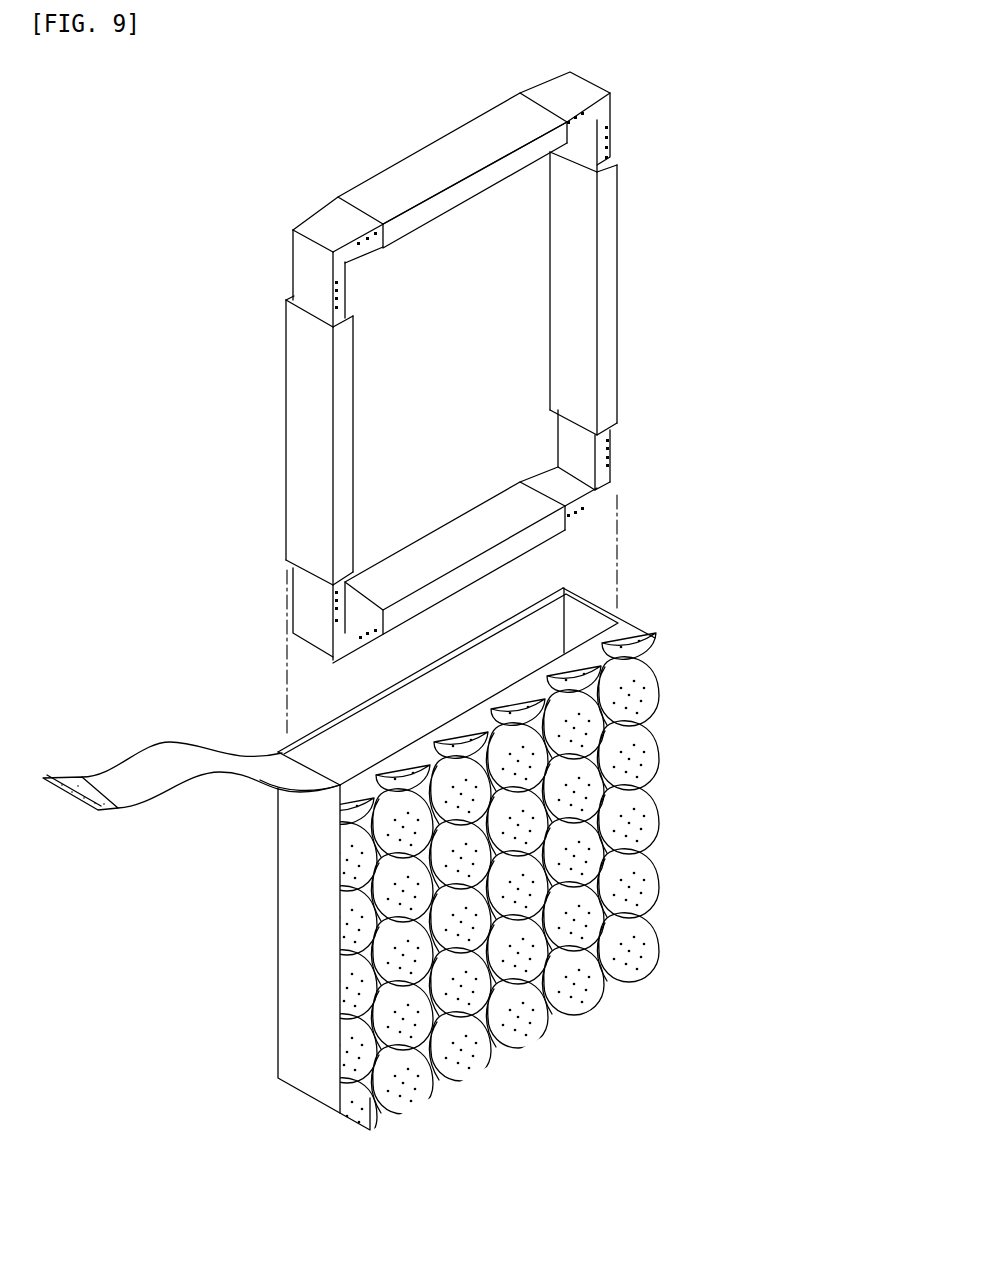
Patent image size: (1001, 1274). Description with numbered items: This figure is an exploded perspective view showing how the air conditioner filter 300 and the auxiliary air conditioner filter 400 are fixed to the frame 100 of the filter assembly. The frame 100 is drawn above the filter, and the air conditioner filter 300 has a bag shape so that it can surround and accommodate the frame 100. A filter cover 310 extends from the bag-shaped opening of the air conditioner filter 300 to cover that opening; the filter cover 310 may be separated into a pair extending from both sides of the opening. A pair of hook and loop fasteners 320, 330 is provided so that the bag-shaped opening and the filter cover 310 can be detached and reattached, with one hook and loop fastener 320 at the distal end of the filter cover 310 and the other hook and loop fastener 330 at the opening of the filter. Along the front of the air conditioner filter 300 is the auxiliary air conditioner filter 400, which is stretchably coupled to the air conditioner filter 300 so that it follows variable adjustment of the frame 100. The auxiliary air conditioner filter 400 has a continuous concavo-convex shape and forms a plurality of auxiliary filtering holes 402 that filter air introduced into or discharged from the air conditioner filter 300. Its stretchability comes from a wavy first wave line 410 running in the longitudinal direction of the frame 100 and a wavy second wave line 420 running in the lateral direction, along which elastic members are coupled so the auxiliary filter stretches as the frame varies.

The frame 100 is at (388, 148).
The air conditioner filter 300 is at (271, 845).
The filter cover 310 is at (175, 753).
The hook and loop fastener 320 is at (82, 780).
The hook and loop fastener 330 is at (603, 603).
The auxiliary air conditioner filter 400 is at (463, 837).
The auxiliary filtering hole 402 is at (638, 695).
The first wave line 410 is at (635, 640).
The second wave line 420 is at (340, 887).